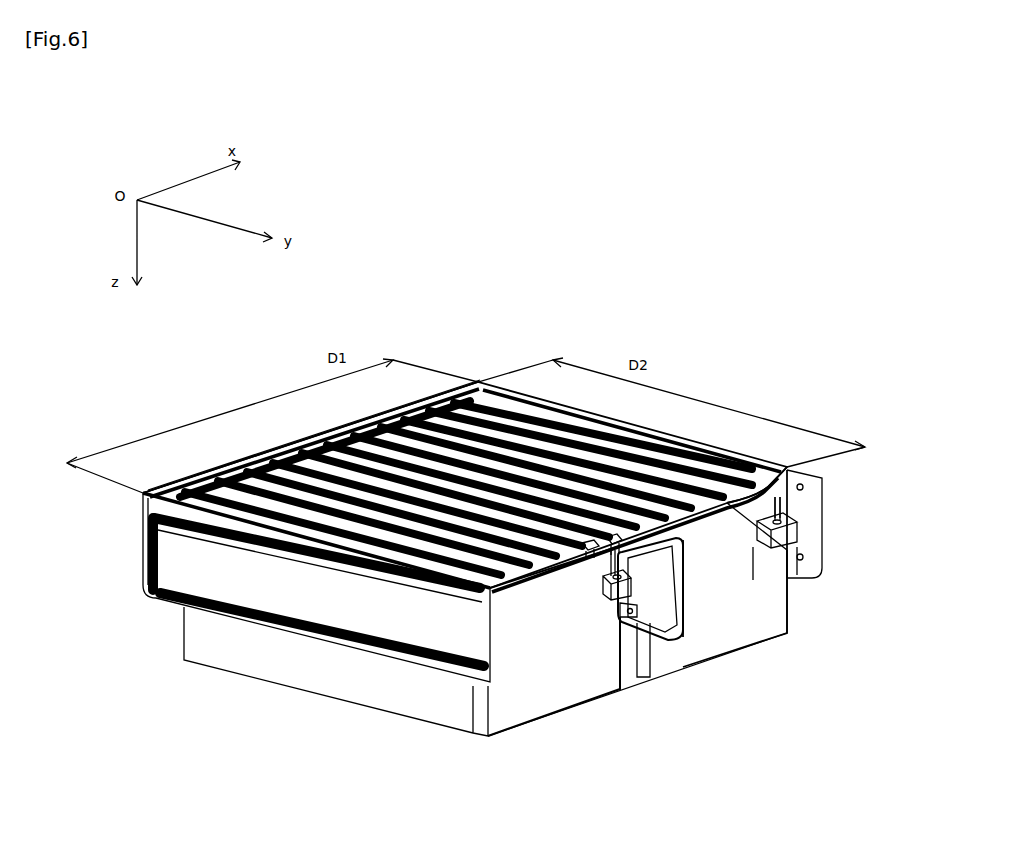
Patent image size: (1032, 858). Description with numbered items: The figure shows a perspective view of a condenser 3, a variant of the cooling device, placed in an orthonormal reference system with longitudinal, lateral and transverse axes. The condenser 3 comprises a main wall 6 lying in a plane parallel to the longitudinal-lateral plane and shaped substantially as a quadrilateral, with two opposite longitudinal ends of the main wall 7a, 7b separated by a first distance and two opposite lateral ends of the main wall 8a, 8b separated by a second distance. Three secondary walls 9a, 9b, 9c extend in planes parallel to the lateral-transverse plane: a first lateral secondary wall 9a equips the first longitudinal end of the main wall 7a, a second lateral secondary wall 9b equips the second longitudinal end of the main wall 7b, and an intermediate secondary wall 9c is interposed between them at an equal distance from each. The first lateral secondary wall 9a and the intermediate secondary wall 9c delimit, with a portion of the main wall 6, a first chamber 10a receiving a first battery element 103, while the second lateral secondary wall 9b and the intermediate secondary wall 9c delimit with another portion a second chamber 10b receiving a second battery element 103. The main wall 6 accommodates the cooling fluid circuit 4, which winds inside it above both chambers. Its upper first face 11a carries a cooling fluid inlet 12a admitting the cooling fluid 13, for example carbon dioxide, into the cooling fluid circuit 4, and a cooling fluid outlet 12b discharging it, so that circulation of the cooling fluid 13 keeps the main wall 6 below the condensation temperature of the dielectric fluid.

The condenser 3 is at (632, 308).
The cooling fluid circuit 4 is at (530, 462).
The main wall 6 is at (317, 407).
The first longitudinal end of the main wall 7a is at (207, 507).
The second longitudinal end of the main wall 7b is at (700, 440).
The lateral end of the main wall 8a is at (783, 500).
The lateral end of the main wall 8b is at (412, 397).
The first lateral secondary wall 9a is at (493, 637).
The second lateral secondary wall 9b is at (820, 563).
The intermediate secondary wall 9c is at (687, 578).
The first chamber 10a is at (590, 648).
The second chamber 10b is at (742, 583).
The first face 11a is at (450, 400).
The cooling fluid inlet 12a is at (613, 540).
The cooling fluid outlet 12b is at (582, 495).
The cooling fluid 13 is at (150, 587).
The battery element 103 is at (669, 557).